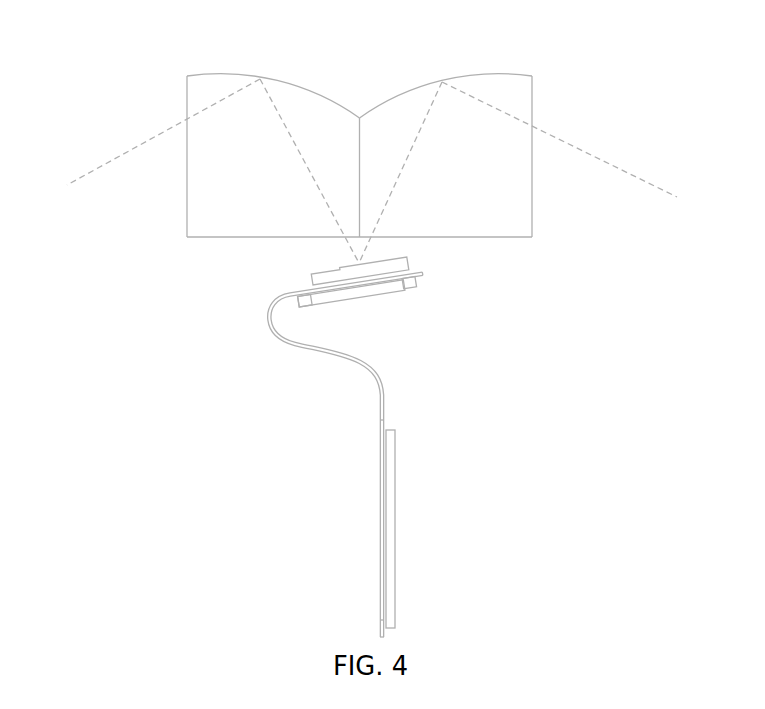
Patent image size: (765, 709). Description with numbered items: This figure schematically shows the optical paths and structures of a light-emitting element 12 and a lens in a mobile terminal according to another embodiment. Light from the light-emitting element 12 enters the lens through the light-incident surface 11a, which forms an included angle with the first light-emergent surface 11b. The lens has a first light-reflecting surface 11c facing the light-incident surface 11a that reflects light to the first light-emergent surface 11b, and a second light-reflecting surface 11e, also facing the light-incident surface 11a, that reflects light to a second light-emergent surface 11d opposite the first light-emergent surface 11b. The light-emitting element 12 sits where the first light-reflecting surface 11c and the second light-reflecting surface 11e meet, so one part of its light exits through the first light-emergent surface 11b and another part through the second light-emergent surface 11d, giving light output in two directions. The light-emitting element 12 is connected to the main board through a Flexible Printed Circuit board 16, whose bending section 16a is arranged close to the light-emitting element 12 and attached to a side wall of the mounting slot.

The light-incident surface 11a is at (232, 237).
The first light-emergent surface 11b is at (187, 98).
The first light-reflecting surface 11c is at (306, 82).
The second light-emergent surface 11d is at (532, 170).
The second light-reflecting surface 11e is at (427, 82).
The light-emitting element 12 is at (340, 274).
The Flexible Printed Circuit board 16 is at (380, 495).
The bending section 16a is at (268, 330).